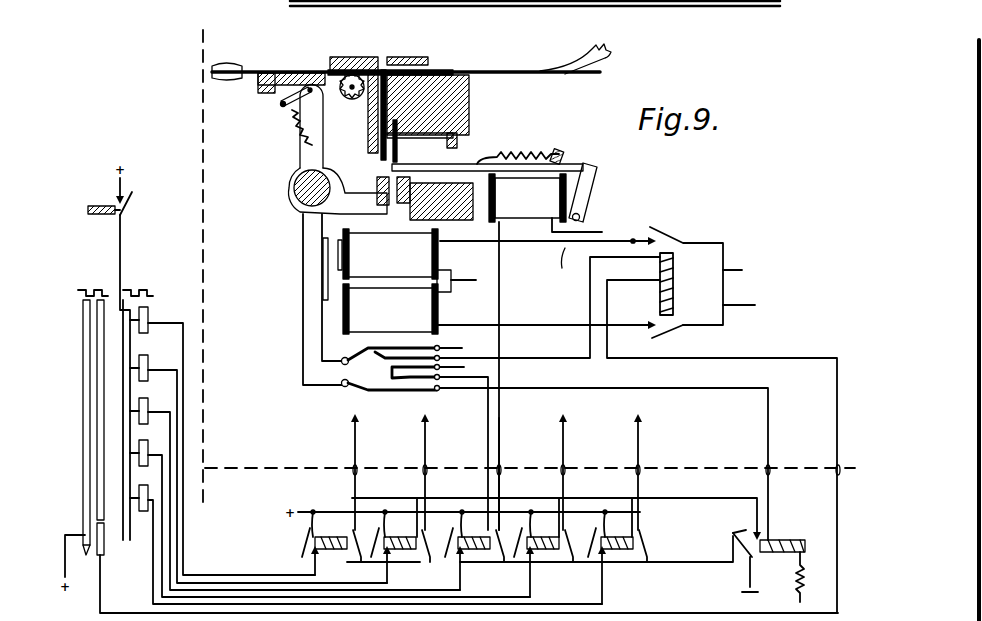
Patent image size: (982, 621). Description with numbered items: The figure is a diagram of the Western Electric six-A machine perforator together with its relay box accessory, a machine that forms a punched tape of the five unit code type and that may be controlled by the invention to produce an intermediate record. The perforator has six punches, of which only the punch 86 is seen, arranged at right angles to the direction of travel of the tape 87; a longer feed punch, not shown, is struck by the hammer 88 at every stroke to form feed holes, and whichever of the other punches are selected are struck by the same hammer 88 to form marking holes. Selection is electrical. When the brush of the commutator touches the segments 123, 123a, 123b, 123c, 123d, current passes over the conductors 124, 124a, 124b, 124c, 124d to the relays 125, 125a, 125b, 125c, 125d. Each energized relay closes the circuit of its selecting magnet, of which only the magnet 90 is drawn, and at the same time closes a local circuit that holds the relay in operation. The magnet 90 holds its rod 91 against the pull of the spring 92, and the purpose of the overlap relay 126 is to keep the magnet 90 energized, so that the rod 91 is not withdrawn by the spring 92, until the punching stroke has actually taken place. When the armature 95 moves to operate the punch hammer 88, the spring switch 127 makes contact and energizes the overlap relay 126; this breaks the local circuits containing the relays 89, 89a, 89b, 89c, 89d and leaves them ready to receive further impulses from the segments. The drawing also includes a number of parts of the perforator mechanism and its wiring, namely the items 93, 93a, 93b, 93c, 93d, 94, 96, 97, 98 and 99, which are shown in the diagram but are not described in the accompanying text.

The punch 86 is at (386, 118).
The tape 87 is at (241, 72).
The hammer 88 is at (365, 195).
The relay 89 is at (501, 431).
The relay 89a is at (427, 431).
The relay 89b is at (357, 431).
The relay 89c is at (565, 431).
The relay 89d is at (640, 431).
The selecting magnet 90 is at (527, 218).
The rod 91 is at (478, 164).
The spring 92 is at (535, 156).
The double solenoid 93 is at (415, 260).
The solenoid core 93a is at (455, 270).
The conductor 93b is at (561, 263).
The conductor 93c is at (530, 325).
The conductor 93d is at (607, 276).
The relay coil 94 is at (673, 272).
The armature 95 is at (323, 248).
The arm pivot 96 is at (293, 192).
The upper armature 97 is at (372, 350).
The gear 98 is at (372, 68).
The lever and spring 99 is at (296, 107).
The segment 123 is at (148, 412).
The segment 123a is at (148, 365).
The segment 123b is at (148, 318).
The segment 123c is at (148, 455).
The segment 123d is at (148, 500).
The conductor 124 is at (170, 425).
The conductor 124a is at (177, 380).
The conductor 124b is at (185, 332).
The conductor 124c is at (162, 470).
The conductor 124d is at (153, 545).
The relay 125 is at (471, 537).
The relay 125a is at (399, 537).
The relay 125b is at (323, 537).
The relay 125c is at (540, 537).
The relay 125d is at (614, 537).
The overlap relay 126 is at (792, 540).
The spring switch 127 is at (390, 392).